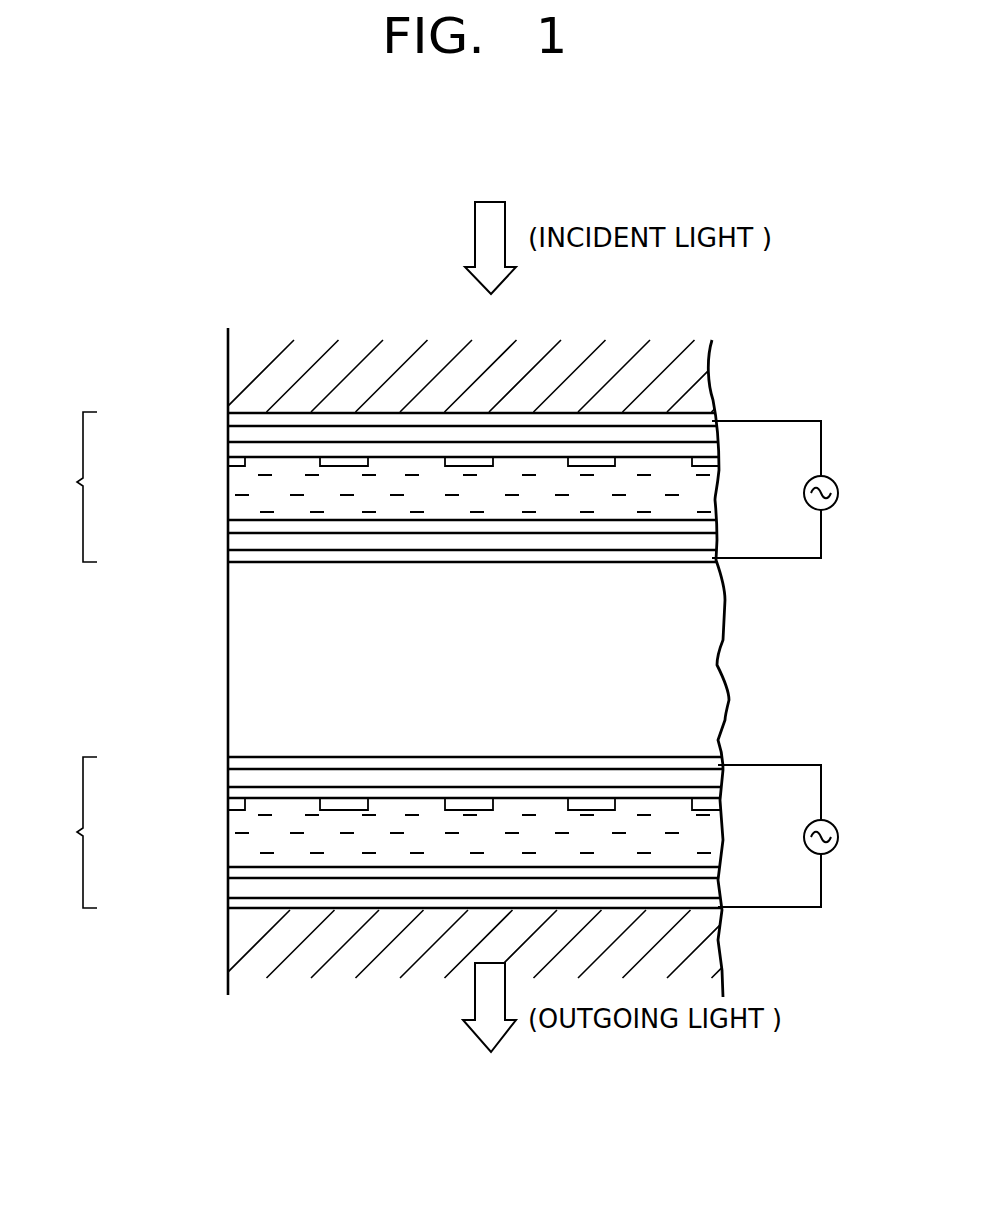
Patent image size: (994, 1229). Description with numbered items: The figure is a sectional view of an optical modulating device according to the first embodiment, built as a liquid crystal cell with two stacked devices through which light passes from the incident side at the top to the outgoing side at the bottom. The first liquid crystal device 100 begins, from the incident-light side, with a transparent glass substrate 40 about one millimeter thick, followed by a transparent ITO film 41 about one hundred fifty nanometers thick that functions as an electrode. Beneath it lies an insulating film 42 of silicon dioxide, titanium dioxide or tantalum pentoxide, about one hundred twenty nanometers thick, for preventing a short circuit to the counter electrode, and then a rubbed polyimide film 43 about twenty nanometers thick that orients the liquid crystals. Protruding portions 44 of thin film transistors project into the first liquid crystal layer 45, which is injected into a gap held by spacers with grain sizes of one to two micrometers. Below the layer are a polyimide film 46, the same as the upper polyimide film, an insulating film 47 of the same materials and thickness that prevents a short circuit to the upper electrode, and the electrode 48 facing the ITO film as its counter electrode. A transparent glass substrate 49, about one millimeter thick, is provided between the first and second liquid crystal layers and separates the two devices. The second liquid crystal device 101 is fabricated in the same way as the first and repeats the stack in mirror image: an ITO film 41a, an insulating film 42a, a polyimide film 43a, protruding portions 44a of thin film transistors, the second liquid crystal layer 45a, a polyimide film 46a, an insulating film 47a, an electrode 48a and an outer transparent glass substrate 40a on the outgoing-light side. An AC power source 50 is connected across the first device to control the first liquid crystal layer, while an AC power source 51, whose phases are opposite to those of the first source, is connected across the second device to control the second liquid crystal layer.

The transparent glass substrate 40 is at (237, 363).
The transparent ITO film 41 is at (230, 415).
The insulating film 42 is at (230, 437).
The polyimide film 43 is at (228, 450).
The protruding portions of TFTs 44 is at (228, 462).
The first liquid crystal layer 45 is at (228, 505).
The polyimide film 46 is at (228, 528).
The insulating film 47 is at (228, 543).
The electrode 48 is at (228, 558).
The transparent glass substrate 49 is at (242, 632).
The first liquid crystal device 100 is at (59, 487).
The AC power source 50 is at (836, 500).
The transparent ITO film 41a is at (228, 762).
The insulating film 42a is at (230, 778).
The polyimide film 43a is at (228, 803).
The protruding portions of TFTs 44a is at (228, 810).
The second liquid crystal layer 45a is at (228, 845).
The polyimide film 46a is at (228, 873).
The insulating film 47a is at (228, 890).
The electrode 48a is at (228, 903).
The transparent glass substrate 40a is at (228, 915).
The second liquid crystal device 101 is at (61, 832).
The AC power source 51 is at (836, 845).